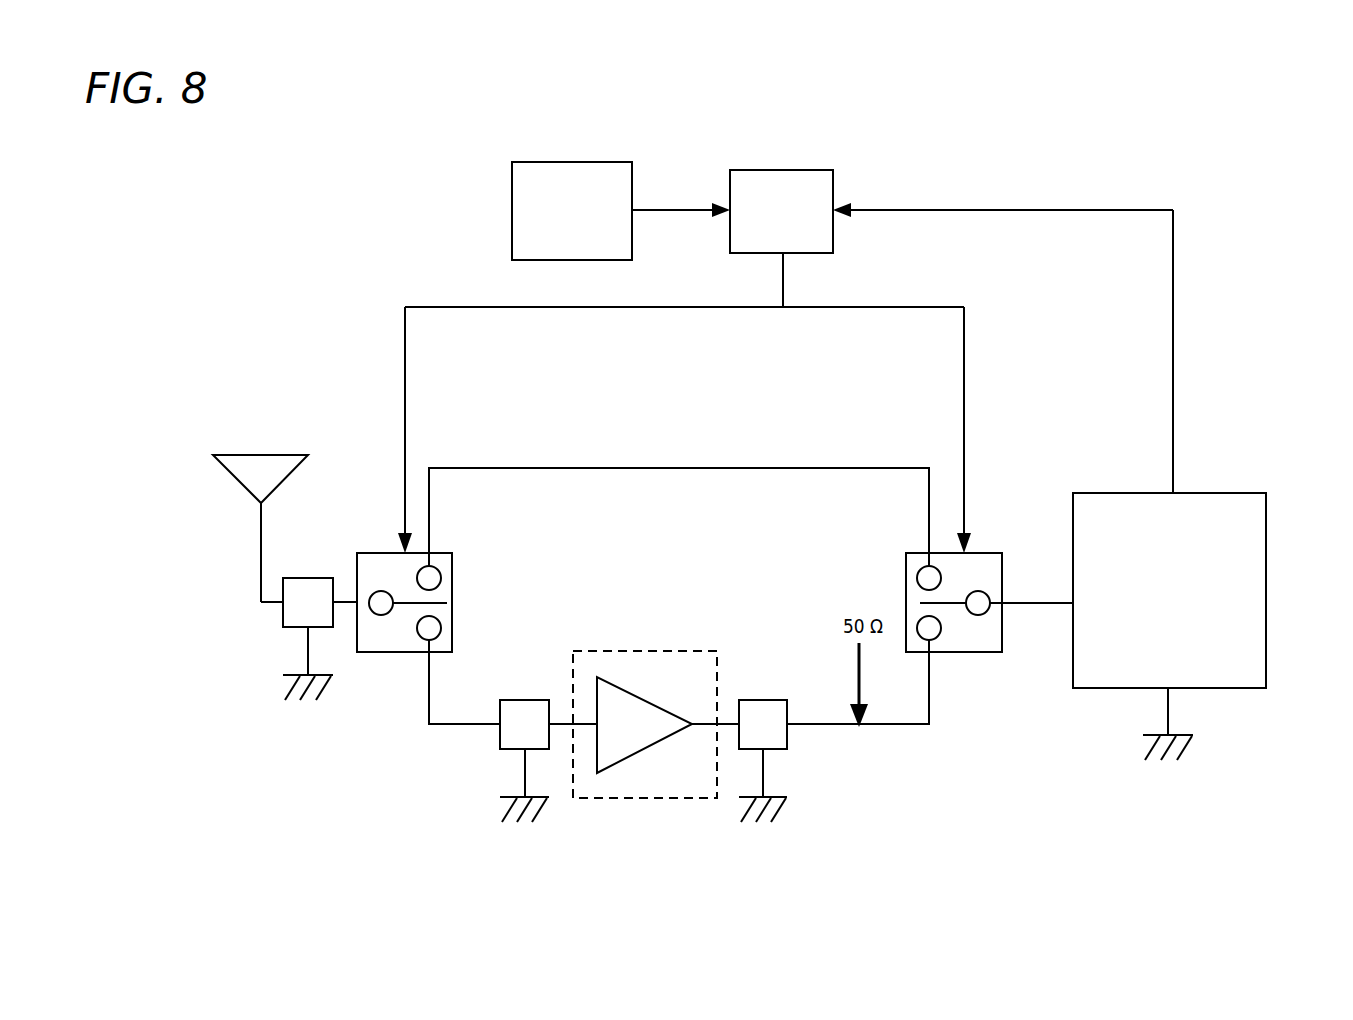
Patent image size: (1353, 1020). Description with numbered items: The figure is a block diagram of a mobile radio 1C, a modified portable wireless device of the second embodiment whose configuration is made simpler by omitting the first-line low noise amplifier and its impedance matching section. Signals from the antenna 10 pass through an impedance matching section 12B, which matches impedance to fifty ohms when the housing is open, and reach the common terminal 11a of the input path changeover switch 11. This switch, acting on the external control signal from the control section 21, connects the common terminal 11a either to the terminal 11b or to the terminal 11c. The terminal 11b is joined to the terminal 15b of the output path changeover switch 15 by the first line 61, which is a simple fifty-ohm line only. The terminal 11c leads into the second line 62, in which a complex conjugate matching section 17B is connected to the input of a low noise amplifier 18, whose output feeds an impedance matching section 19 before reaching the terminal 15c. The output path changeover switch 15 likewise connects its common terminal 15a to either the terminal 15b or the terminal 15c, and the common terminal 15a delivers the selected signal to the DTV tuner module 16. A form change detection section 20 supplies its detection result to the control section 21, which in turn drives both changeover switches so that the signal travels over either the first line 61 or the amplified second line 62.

The mobile radio 1C is at (1032, 86).
The antenna 10 is at (247, 462).
The input path changeover switch 11 is at (419, 609).
The common terminal 11a is at (384, 615).
The terminal 11b is at (433, 568).
The terminal 11c is at (433, 619).
The impedance matching section 12B is at (297, 578).
The output path changeover switch 15 is at (966, 605).
The common terminal 15a is at (988, 613).
The terminal 15b is at (928, 567).
The terminal 15c is at (934, 636).
The DTV tuner module 16 is at (1223, 493).
The complex conjugate matching section 17B is at (522, 700).
The low noise amplifier 18 is at (717, 651).
The impedance matching section 19 is at (792, 741).
The form change detection section 20 is at (632, 162).
The control section 21 is at (818, 170).
The first line 61 is at (814, 468).
The second line 62 is at (931, 713).